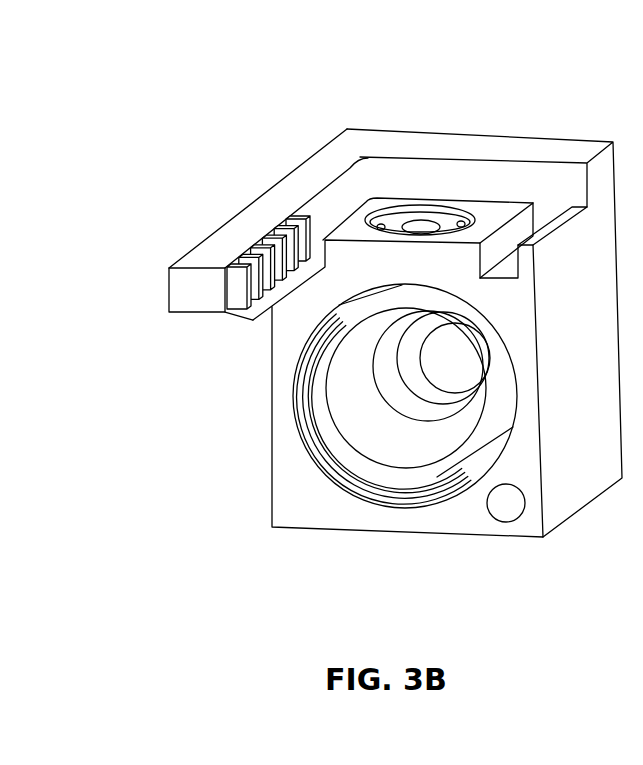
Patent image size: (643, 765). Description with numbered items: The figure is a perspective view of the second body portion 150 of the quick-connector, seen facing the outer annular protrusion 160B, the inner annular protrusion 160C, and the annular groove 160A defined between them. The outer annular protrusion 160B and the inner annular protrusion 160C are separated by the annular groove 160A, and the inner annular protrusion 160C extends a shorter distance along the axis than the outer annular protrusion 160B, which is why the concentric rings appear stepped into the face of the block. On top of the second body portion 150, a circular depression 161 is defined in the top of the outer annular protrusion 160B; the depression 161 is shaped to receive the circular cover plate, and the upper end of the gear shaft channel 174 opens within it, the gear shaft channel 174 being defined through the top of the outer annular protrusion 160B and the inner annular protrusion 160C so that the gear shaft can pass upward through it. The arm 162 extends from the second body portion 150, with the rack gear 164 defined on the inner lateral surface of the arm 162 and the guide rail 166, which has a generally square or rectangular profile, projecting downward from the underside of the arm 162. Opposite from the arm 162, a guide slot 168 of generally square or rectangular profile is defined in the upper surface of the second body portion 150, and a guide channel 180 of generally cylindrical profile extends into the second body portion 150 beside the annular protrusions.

The second body portion 150 is at (328, 321).
The arm 162 is at (184, 261).
The rack gear 164 is at (246, 257).
The guide rail 166 is at (224, 314).
The depression 161 is at (403, 212).
The gear shaft channel 174 is at (429, 225).
The guide slot 168 is at (503, 240).
The outer annular protrusion 160B is at (283, 412).
The annular groove 160A is at (331, 446).
The inner annular protrusion 160C is at (380, 458).
The guide channel 180 is at (508, 512).